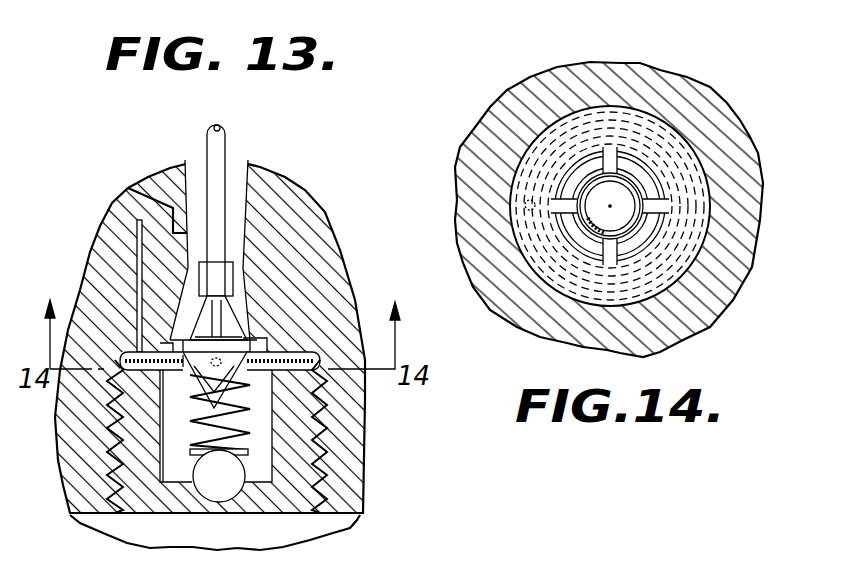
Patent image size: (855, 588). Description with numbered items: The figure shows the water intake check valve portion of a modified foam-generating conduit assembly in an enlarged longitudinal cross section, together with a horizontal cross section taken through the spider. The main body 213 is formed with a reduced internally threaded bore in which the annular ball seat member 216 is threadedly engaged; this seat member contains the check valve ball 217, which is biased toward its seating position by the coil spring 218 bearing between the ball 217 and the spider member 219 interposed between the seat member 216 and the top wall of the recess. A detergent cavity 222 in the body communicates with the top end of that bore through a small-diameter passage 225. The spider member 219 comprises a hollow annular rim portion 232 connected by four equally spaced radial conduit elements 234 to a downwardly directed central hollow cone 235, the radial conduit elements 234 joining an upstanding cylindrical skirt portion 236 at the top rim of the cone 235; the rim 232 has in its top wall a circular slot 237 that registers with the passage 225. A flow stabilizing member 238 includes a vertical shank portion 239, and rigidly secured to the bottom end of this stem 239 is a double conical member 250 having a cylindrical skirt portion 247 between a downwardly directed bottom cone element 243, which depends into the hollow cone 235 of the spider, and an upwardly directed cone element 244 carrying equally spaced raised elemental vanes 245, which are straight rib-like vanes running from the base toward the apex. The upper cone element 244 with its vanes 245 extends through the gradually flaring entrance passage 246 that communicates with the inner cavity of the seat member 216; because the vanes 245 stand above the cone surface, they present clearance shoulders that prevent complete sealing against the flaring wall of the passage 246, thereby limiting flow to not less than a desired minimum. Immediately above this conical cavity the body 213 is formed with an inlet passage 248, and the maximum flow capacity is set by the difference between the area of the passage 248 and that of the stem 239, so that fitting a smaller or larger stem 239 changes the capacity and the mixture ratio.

In FIG. 13, the main body 213 is at (357, 466).
In FIG. 14, the main body 213 is at (710, 113).
In FIG. 13, the annular ball seat member 216 is at (313, 443).
In FIG. 13, the check valve ball 217 is at (227, 492).
In FIG. 13, the coil spring 218 is at (162, 450).
In FIG. 14, the coil spring 218 is at (580, 188).
In FIG. 13, the spider member 219 is at (362, 371).
In FIG. 14, the spider member 219 is at (703, 175).
In FIG. 13, the cavity 222 is at (138, 187).
In FIG. 13, the small-diameter passage 225 is at (137, 296).
In FIG. 14, the small-diameter passage 225 is at (515, 178).
In FIG. 14, the hollow annular rim portion 232 is at (523, 247).
In FIG. 14, the radial conduit elements 234 is at (609, 160).
In FIG. 13, the central hollow cone 235 is at (112, 396).
In FIG. 14, the central hollow cone 235 is at (622, 187).
In FIG. 13, the upstanding cylindrical skirt portion 236 is at (168, 358).
In FIG. 14, the circular slot 237 is at (717, 197).
In FIG. 13, the flow stabilizing member 238 is at (228, 135).
In FIG. 13, the vertical shank portion 239 is at (213, 150).
In FIG. 13, the bottom cone element 243 is at (262, 312).
In FIG. 13, the upwardly directed cone element 244 is at (243, 268).
In FIG. 13, the raised elemental vanes 245 is at (94, 249).
In FIG. 13, the gradually flaring entrance passage 246 is at (252, 290).
In FIG. 13, the cylindrical skirt portion 247 is at (170, 345).
In FIG. 13, the inlet passage 248 is at (247, 258).
In FIG. 13, the double conical member 250 is at (333, 308).